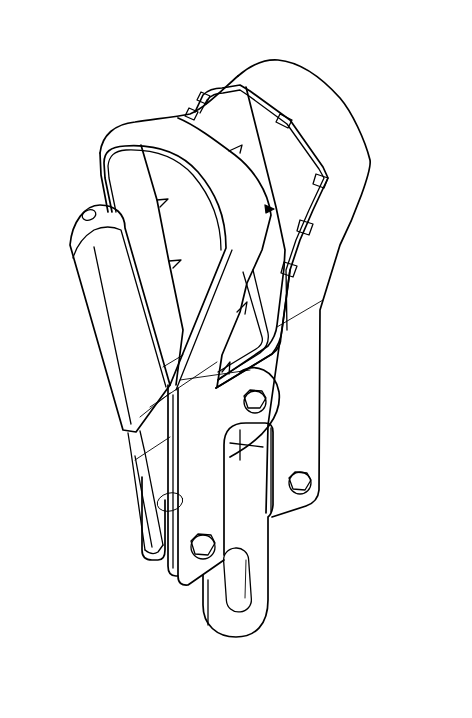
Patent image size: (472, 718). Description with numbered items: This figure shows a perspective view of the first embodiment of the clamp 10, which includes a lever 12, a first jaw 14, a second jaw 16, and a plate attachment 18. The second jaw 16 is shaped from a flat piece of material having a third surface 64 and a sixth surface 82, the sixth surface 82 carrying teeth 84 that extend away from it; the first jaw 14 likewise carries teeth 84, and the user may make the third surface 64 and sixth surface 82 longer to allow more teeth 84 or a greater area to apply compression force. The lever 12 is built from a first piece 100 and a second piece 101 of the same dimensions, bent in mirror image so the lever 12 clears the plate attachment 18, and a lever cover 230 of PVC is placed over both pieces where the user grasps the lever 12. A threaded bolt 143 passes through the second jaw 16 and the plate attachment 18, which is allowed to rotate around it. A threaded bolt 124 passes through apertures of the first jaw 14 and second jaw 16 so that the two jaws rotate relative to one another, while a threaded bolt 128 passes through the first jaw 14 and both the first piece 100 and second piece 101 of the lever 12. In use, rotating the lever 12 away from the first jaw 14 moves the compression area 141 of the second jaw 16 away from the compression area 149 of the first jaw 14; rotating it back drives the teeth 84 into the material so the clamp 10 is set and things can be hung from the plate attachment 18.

The clamp 10 is at (325, 50).
The lever 12 is at (82, 228).
The first jaw 14 is at (135, 125).
The second jaw 16 is at (240, 74).
The plate attachment 18 is at (262, 583).
The third surface 64 is at (101, 148).
The sixth surface 82 is at (257, 108).
The teeth 84 is at (205, 93).
The first piece 100 is at (135, 480).
The second piece 101 is at (163, 500).
The threaded bolt 124 is at (268, 410).
The threaded bolt 128 is at (200, 573).
The compression area 141 is at (361, 163).
The threaded bolt 143 is at (310, 487).
The compression area 149 is at (249, 212).
The lever cover 230 is at (100, 323).